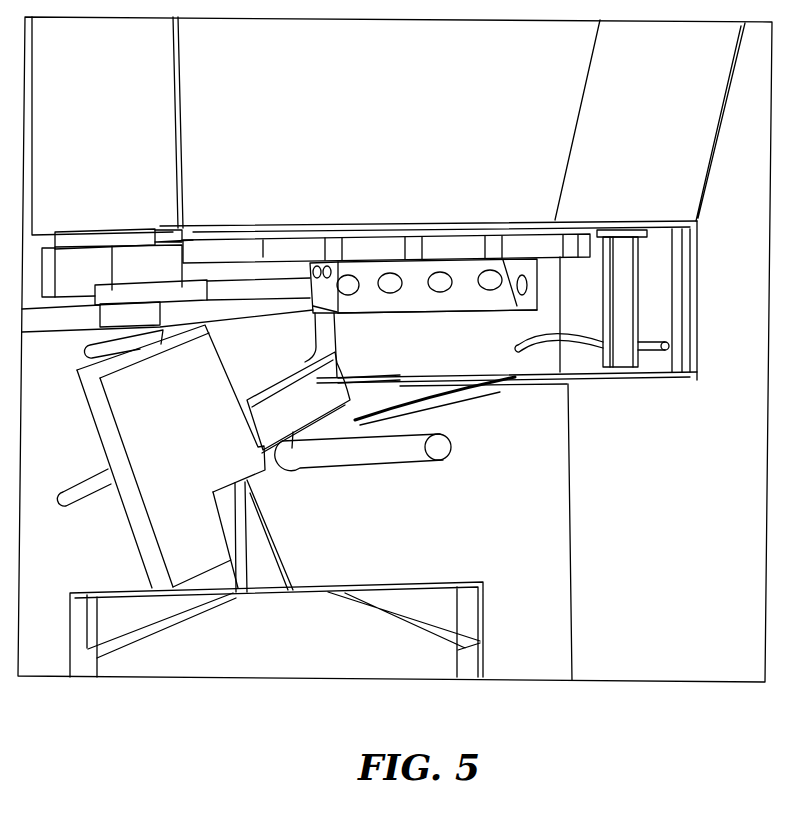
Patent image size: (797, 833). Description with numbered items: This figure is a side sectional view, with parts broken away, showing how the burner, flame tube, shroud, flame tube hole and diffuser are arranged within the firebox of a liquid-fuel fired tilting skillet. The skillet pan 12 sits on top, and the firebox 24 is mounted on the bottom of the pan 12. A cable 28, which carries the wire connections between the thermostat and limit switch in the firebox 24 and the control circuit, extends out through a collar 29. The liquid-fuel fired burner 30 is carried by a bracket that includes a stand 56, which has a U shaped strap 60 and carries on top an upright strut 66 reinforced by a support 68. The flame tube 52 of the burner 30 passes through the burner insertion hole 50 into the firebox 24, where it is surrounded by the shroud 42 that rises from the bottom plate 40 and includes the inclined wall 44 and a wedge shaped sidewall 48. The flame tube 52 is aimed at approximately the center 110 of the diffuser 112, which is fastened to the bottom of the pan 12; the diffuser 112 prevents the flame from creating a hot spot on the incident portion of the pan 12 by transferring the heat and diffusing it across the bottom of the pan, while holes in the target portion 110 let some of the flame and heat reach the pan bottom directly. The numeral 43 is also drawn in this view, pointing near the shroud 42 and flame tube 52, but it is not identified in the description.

The skillet pan 12 is at (729, 115).
The firebox 24 is at (700, 328).
The cable 28 is at (578, 345).
The collar 29 is at (643, 267).
The liquid-fuel fired burner 30 is at (161, 456).
The bottom plate 40 is at (212, 577).
The shroud 42 is at (527, 320).
The support plate 43 is at (380, 368).
The inclined wall 44 is at (463, 399).
The wedge shaped sidewall 48 is at (342, 416).
The burner insertion hole 50 is at (348, 365).
The flame tube 52 is at (298, 402).
The stand 56 is at (490, 605).
The U shaped strap 60 is at (443, 582).
The upright strut 66 is at (248, 515).
The support 68 is at (285, 559).
The center of diffuser 110 is at (430, 312).
The diffuser 112 is at (496, 318).